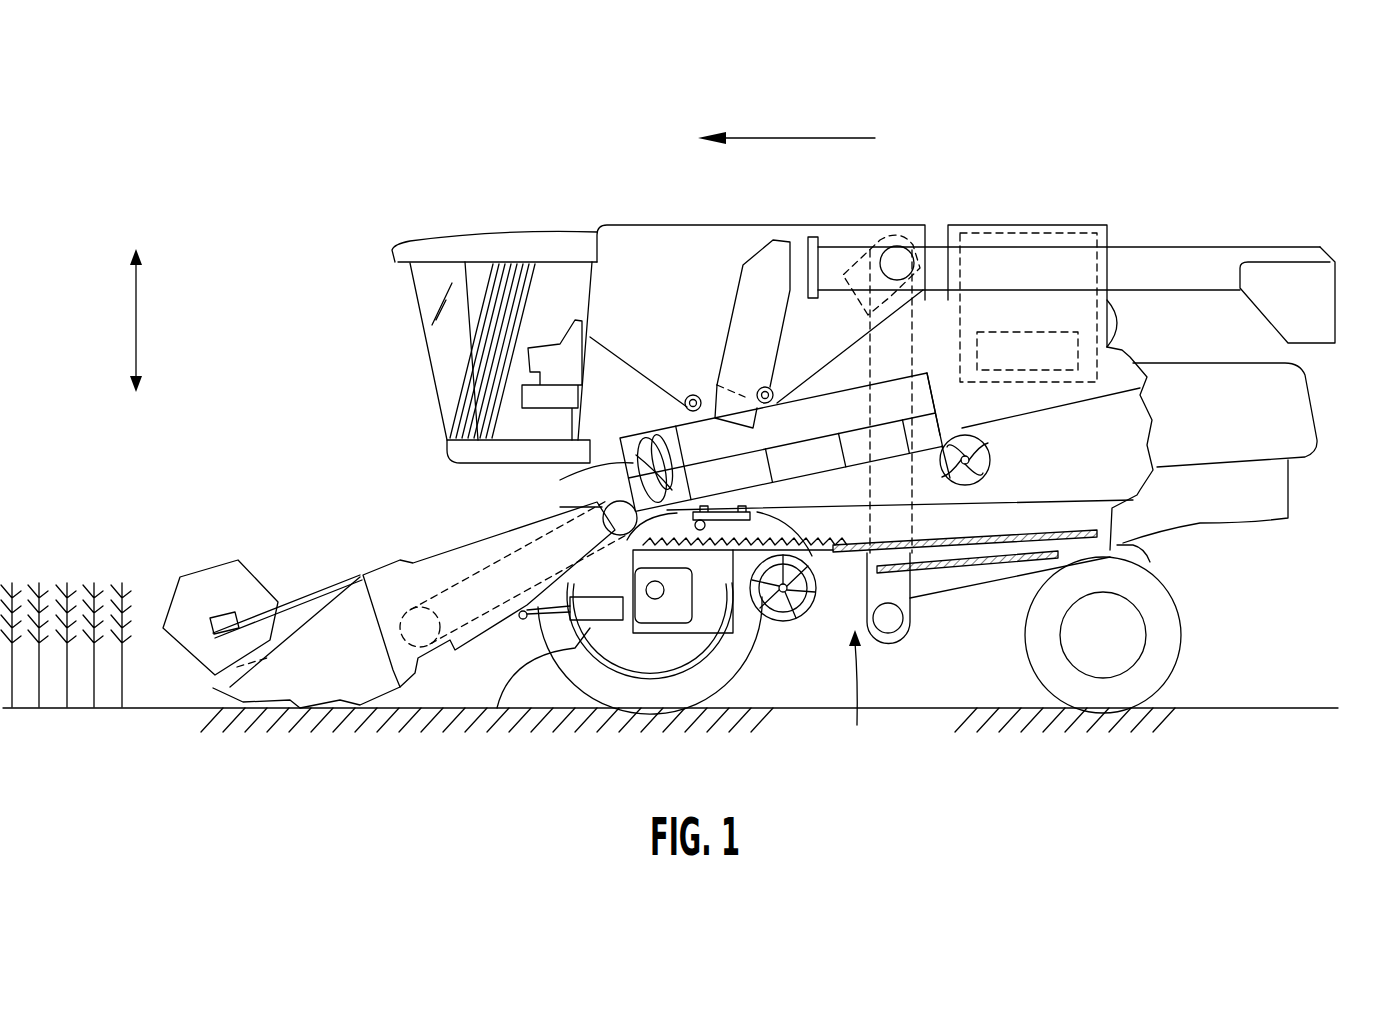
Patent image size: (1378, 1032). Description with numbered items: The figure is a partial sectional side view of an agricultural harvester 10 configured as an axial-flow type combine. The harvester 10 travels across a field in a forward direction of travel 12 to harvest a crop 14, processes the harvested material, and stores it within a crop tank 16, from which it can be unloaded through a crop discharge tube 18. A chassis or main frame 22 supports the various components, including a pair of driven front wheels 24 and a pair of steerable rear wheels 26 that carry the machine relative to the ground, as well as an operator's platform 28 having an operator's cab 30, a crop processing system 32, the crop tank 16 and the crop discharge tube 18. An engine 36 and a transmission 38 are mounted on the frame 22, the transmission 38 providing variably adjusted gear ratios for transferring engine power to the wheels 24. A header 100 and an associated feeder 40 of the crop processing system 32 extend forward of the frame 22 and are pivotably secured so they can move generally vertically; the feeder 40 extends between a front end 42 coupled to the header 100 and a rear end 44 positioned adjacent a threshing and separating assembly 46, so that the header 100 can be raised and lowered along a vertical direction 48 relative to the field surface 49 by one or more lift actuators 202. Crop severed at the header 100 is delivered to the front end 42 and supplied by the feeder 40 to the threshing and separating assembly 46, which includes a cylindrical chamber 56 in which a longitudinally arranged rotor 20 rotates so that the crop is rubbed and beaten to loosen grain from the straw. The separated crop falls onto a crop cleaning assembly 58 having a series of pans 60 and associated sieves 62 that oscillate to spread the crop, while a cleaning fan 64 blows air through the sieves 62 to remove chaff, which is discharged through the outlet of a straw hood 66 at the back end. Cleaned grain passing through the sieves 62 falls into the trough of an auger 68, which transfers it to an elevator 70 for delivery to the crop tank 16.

The agricultural harvester 10 is at (447, 182).
The forward direction of travel 12 is at (807, 138).
The crop 14 is at (80, 570).
The crop tank 16 is at (685, 225).
The crop discharge tube 18 is at (1165, 245).
The rotor 20 is at (652, 452).
The frame 22 is at (1133, 545).
The front wheels 24 is at (593, 677).
The rear wheels 26 is at (1173, 645).
The operator's platform 28 is at (440, 455).
The operator's cab 30 is at (437, 343).
The crop processing system 32 is at (1013, 491).
The engine 36 is at (990, 225).
The transmission 38 is at (1007, 332).
The feeder 40 is at (427, 528).
The front end 42 is at (333, 597).
The rear end 44 is at (600, 492).
The threshing and separating assembly 46 is at (797, 438).
The vertical direction 48 is at (138, 318).
The field surface 49 is at (1255, 706).
The cylindrical chamber 56 is at (840, 397).
The crop cleaning assembly 58 is at (856, 697).
The pans 60 is at (797, 533).
The sieves 62 is at (930, 545).
The cleaning fan 64 is at (787, 615).
The straw hood 66 is at (1312, 430).
The auger 68 is at (888, 630).
The elevator 70 is at (923, 313).
The header 100 is at (211, 543).
The lift actuators 202 is at (547, 650).